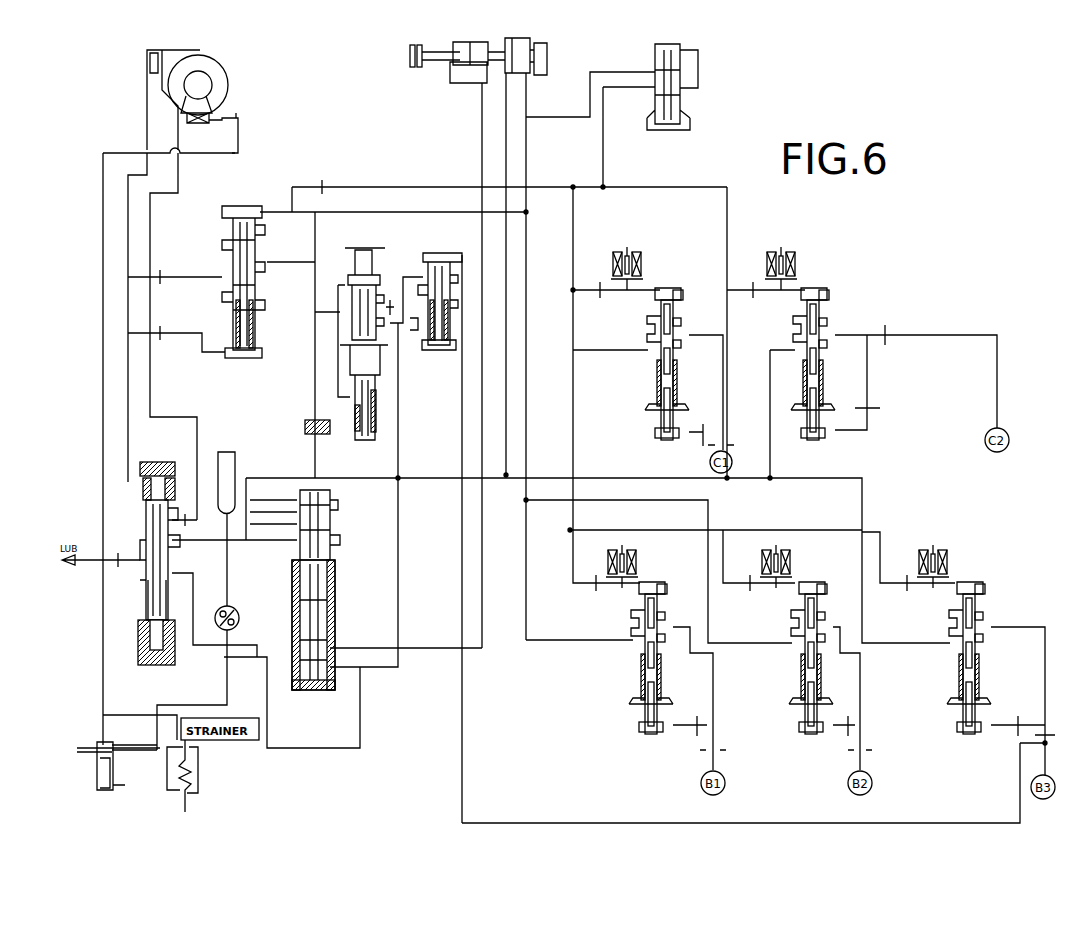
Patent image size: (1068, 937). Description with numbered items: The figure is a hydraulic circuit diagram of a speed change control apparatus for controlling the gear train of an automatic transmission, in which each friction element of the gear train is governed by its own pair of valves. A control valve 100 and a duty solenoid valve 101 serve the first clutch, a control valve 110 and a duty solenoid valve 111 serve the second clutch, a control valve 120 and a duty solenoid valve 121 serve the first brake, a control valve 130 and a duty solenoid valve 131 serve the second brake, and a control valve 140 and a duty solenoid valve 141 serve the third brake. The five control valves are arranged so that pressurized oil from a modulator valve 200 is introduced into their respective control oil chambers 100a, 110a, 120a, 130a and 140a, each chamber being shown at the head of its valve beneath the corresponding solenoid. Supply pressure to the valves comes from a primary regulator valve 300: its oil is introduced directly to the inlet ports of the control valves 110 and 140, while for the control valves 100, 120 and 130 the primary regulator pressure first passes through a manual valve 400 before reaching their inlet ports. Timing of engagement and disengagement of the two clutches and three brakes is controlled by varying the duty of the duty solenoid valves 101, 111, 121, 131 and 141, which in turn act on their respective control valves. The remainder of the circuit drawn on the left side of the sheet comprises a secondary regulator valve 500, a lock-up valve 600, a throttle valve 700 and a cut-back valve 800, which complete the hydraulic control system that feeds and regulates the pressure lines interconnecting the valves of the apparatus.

The control valve 100 is at (660, 288).
The control oil chamber 100a is at (683, 296).
The duty solenoid valve 101 is at (615, 264).
The control valve 110 is at (812, 288).
The control oil chamber 110a is at (833, 300).
The duty solenoid valve 111 is at (768, 264).
The control valve 120 is at (651, 582).
The control oil chamber 120a is at (668, 590).
The duty solenoid valve 121 is at (610, 568).
The control valve 130 is at (808, 582).
The control oil chamber 130a is at (826, 590).
The duty solenoid valve 131 is at (764, 568).
The control valve 140 is at (969, 582).
The control oil chamber 140a is at (990, 592).
The duty solenoid valve 141 is at (920, 565).
The modulator valve 200 is at (674, 45).
The primary regulator valve 300 is at (330, 518).
The manual valve 400 is at (548, 57).
The secondary regulator valve 500 is at (140, 522).
The lock-up valve 600 is at (228, 238).
The throttle valve 700 is at (350, 281).
The cut-back valve 800 is at (436, 256).